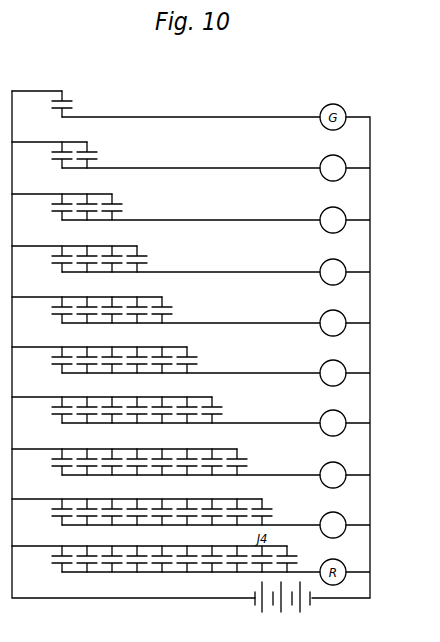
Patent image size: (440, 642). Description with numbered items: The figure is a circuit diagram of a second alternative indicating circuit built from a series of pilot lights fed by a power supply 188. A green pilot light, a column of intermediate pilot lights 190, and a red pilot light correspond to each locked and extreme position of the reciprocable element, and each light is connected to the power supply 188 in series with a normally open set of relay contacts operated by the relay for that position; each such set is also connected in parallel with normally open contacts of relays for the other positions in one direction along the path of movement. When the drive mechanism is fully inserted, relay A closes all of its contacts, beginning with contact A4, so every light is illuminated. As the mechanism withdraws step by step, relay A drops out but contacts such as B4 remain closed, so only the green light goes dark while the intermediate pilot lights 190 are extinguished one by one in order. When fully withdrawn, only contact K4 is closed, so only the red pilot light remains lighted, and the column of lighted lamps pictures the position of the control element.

The intermediate pilot light 190 is at (341, 174).
The power supply 188 is at (290, 612).
The relay contact A/4 A4 is at (62, 97).
The relay contact B/4 B4 is at (87, 148).
The relay contact K/4 K4 is at (287, 552).